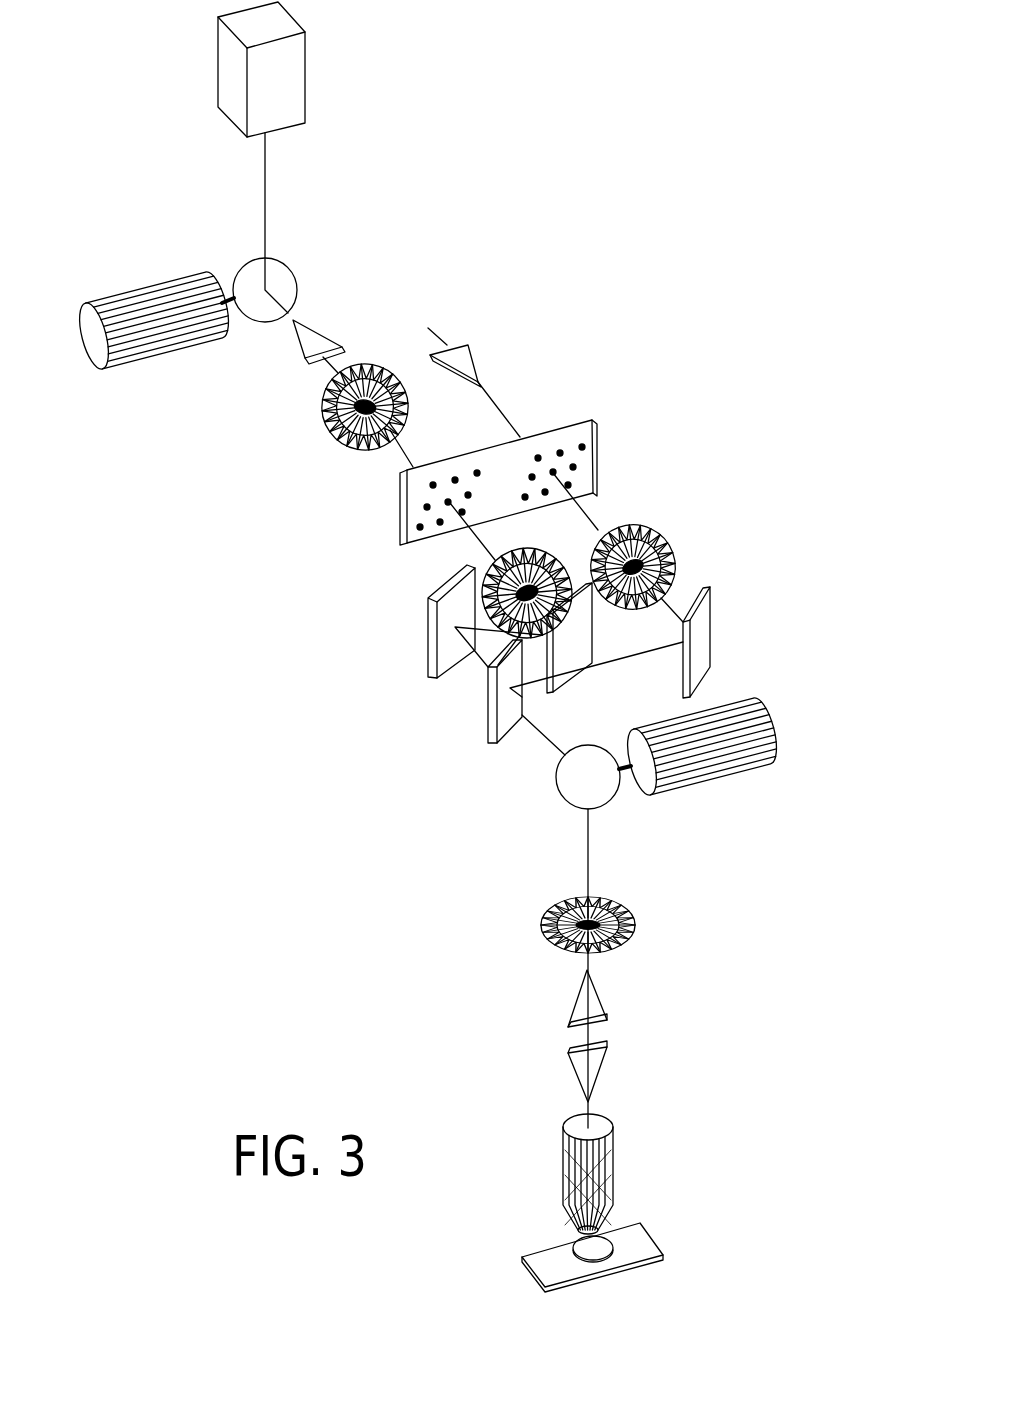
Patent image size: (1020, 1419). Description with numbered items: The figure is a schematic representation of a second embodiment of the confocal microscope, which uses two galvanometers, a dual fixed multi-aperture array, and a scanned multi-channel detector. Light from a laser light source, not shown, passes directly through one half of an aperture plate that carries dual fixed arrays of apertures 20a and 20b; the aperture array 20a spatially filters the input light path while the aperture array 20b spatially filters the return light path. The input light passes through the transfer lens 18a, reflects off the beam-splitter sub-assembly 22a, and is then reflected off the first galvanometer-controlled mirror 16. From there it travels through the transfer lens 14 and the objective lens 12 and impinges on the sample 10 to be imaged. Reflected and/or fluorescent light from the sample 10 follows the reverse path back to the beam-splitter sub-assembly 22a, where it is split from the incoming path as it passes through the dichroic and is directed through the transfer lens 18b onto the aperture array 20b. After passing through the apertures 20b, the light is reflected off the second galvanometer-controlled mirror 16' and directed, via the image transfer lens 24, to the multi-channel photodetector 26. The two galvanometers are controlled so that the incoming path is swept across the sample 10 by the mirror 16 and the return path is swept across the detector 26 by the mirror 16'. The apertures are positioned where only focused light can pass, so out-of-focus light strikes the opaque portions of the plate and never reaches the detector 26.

The sample 10 is at (652, 1246).
The objective lens 12 is at (650, 1102).
The transfer lens 14 is at (644, 912).
The first galvanometer-controlled mirror 16 is at (630, 778).
The second galvanometer-controlled mirror 16' is at (237, 291).
The transfer lens 18a is at (680, 552).
The transfer lens 18b is at (588, 556).
The aperture array 20a is at (560, 445).
The aperture array 20b is at (426, 529).
The beam-splitter sub-assembly 22a is at (530, 685).
The image transfer lens 24 is at (307, 417).
The multi-channel photodetector 26 is at (326, 72).